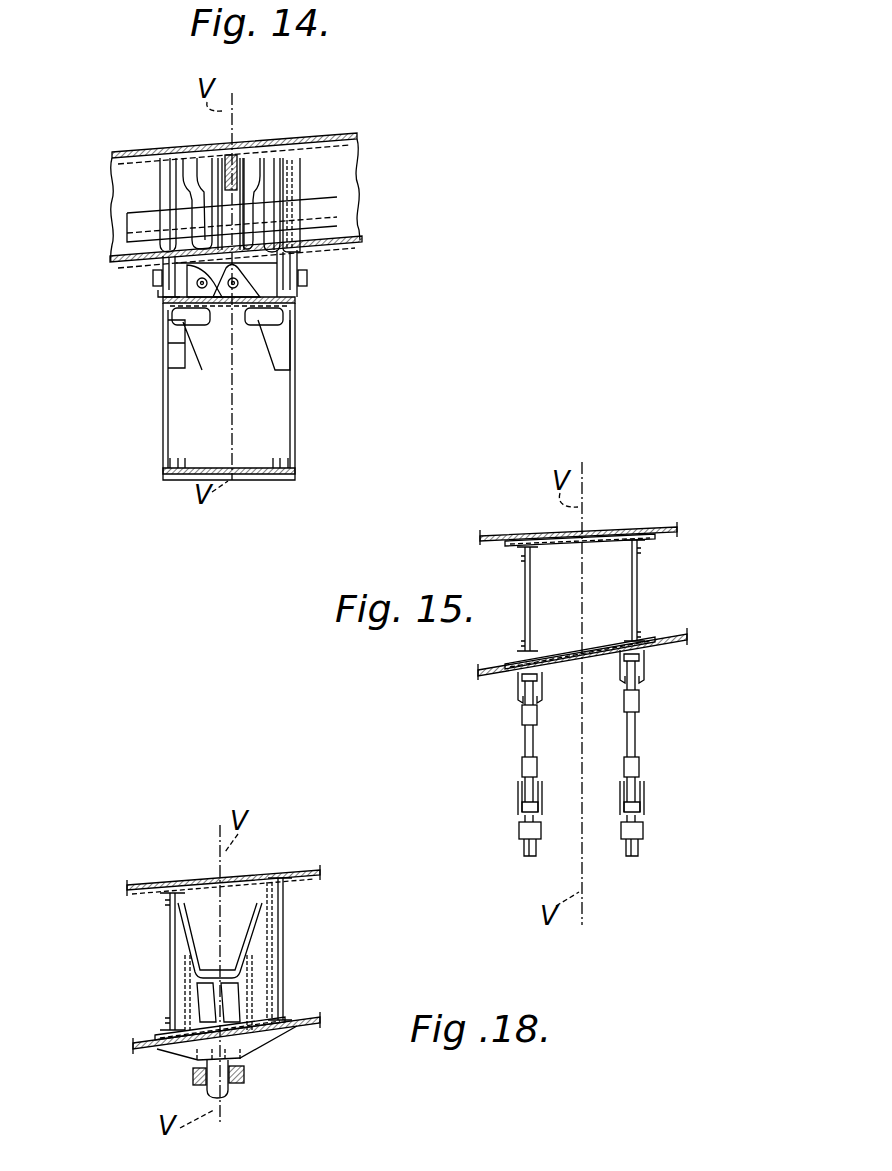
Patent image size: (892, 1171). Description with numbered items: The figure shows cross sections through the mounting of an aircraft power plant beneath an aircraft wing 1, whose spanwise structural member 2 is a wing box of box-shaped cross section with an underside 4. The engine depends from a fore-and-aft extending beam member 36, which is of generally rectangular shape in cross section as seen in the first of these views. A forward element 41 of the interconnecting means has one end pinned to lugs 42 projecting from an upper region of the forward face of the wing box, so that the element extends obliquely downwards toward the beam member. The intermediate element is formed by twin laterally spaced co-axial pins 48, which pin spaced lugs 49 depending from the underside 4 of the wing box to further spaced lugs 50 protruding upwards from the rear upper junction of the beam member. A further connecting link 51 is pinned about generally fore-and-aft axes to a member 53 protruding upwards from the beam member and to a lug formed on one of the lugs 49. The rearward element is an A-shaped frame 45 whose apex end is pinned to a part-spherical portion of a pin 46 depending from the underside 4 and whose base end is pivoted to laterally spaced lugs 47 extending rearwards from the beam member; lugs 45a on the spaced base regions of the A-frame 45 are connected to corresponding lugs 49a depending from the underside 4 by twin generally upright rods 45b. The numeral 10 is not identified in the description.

In FIG. 14, the aircraft wing 1 is at (82, 279).
In FIG. 15, the aircraft wing 1 is at (476, 626).
In FIG. 18, the aircraft wing 1 is at (112, 984).
In FIG. 14, the spanwise structural member 2 is at (334, 135).
In FIG. 15, the spanwise structural member 2 is at (620, 527).
In FIG. 18, the spanwise structural member 2 is at (283, 873).
In FIG. 14, the underside 4 is at (337, 258).
In FIG. 15, the underside 4 is at (683, 640).
In FIG. 18, the underside 4 is at (135, 1046).
In FIG. 14, the cross member 10 is at (285, 290).
In FIG. 14, the beam member 36 is at (165, 365).
In FIG. 14, the forward element 41 is at (238, 151).
In FIG. 14, the lugs 42 is at (218, 172).
In FIG. 15, the A-shaped frame 45 is at (517, 813).
In FIG. 18, the A-shaped frame 45 is at (198, 1076).
In FIG. 15, the lugs 45a is at (517, 786).
In FIG. 15, the upright rods 45b is at (522, 738).
In FIG. 18, the pin 46 is at (228, 1086).
In FIG. 15, the lugs 47 is at (520, 856).
In FIG. 14, the co-axial pins 48 is at (305, 262).
In FIG. 14, the lugs 49 is at (290, 240).
In FIG. 15, the lugs 49a is at (515, 698).
In FIG. 14, the lugs 50 is at (300, 290).
In FIG. 14, the link 51 is at (215, 297).
In FIG. 14, the member 53 is at (240, 298).